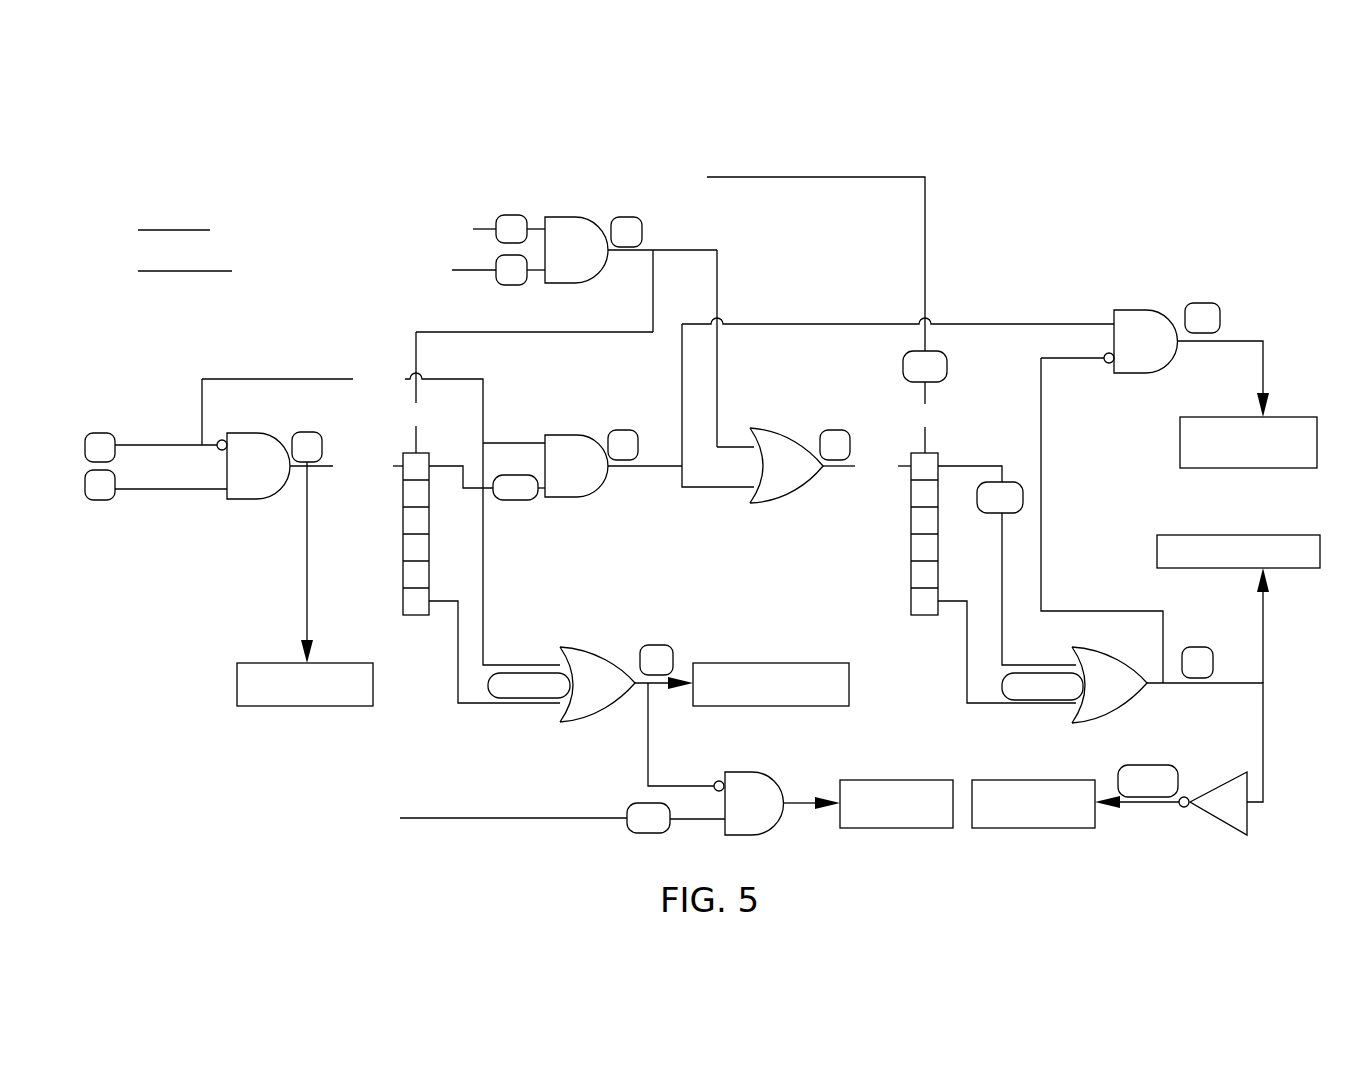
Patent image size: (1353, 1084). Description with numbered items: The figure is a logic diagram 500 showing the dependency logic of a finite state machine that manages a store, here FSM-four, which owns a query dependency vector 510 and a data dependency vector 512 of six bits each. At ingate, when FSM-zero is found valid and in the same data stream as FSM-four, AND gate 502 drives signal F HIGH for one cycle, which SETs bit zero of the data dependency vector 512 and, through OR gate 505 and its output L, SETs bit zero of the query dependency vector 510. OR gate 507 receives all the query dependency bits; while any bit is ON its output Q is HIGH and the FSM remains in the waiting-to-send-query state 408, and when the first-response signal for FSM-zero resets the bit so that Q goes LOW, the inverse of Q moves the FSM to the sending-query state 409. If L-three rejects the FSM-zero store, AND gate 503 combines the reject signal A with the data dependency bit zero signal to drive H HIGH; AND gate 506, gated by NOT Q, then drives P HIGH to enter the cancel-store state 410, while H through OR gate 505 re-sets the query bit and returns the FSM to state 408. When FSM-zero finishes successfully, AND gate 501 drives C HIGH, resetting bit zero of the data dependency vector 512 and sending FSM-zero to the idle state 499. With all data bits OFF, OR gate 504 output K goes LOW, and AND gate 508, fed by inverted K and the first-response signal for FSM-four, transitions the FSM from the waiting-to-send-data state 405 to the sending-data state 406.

The logic diagram 500 is at (1112, 180).
The AND gate 501 is at (237, 478).
The AND gate 502 is at (553, 262).
The AND gate 503 is at (555, 479).
The OR gate 504 is at (582, 696).
The OR gate 505 is at (772, 479).
The AND gate 506 is at (1124, 353).
The OR gate 507 is at (1094, 696).
The AND gate 508 is at (734, 815).
The query dependency vector 510 is at (903, 535).
The data dependency vector 512 is at (396, 534).
The idle state 499 is at (267, 663).
The waiting to send data state 405 is at (769, 663).
The sending data state 406 is at (895, 780).
The waiting to send query state 408 is at (1243, 535).
The sending query state 409 is at (1031, 780).
The requesting L3 to cancel store state 410 is at (1303, 417).